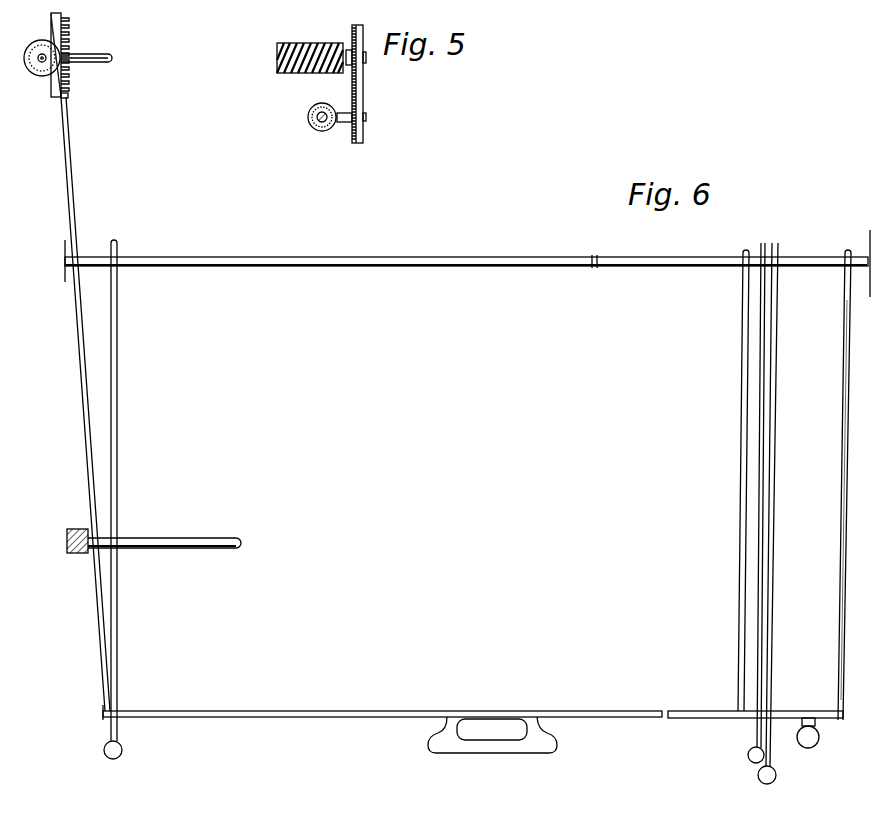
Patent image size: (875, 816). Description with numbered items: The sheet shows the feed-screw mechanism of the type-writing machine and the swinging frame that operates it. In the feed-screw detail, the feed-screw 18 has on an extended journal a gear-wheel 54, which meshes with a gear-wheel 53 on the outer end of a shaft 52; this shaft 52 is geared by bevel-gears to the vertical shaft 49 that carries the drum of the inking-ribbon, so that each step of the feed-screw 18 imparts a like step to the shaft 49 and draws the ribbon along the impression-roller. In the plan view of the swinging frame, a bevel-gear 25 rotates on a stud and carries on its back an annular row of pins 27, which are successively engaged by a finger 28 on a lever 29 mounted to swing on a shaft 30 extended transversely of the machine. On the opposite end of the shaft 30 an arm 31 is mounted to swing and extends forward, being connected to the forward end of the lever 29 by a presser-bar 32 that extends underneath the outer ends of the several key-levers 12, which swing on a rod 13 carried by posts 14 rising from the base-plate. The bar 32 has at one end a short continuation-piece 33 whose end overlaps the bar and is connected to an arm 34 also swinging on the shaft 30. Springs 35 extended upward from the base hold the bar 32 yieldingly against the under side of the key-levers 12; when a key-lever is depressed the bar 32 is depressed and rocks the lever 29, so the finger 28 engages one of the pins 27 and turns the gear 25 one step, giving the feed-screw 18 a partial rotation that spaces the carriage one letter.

In FIG. 6, the key-lever 12 is at (109, 666).
In FIG. 6, the rod 13 is at (162, 545).
In FIG. 6, the post 14 is at (66, 543).
In FIG. 5, the feed-screw 18 is at (298, 44).
In FIG. 6, the bevel-gear 25 is at (54, 96).
In FIG. 6, the pins or projections 27 is at (86, 42).
In FIG. 6, the finger 28 is at (68, 97).
In FIG. 6, the lever 29 is at (80, 351).
In FIG. 6, the shaft 30 is at (269, 261).
In FIG. 6, the arm 31 is at (742, 486).
In FIG. 6, the presser-bar 32 is at (406, 711).
In FIG. 6, the continuation-piece 33 is at (789, 717).
In FIG. 6, the arm 34 is at (845, 515).
In FIG. 6, the spring 35 is at (557, 745).
In FIG. 5, the vertical shaft 49 is at (323, 123).
In FIG. 5, the shaft 52 is at (348, 110).
In FIG. 5, the gear-wheel 53 is at (363, 137).
In FIG. 5, the gear-wheel 54 is at (361, 66).